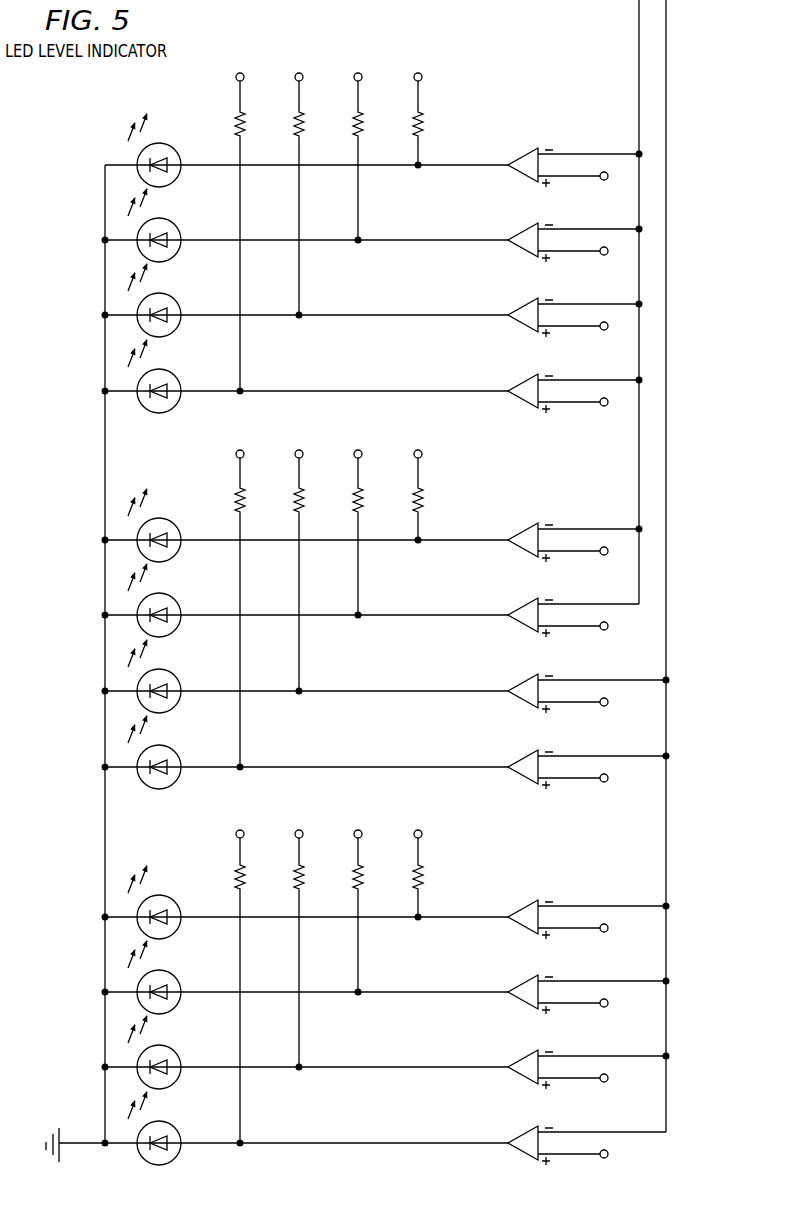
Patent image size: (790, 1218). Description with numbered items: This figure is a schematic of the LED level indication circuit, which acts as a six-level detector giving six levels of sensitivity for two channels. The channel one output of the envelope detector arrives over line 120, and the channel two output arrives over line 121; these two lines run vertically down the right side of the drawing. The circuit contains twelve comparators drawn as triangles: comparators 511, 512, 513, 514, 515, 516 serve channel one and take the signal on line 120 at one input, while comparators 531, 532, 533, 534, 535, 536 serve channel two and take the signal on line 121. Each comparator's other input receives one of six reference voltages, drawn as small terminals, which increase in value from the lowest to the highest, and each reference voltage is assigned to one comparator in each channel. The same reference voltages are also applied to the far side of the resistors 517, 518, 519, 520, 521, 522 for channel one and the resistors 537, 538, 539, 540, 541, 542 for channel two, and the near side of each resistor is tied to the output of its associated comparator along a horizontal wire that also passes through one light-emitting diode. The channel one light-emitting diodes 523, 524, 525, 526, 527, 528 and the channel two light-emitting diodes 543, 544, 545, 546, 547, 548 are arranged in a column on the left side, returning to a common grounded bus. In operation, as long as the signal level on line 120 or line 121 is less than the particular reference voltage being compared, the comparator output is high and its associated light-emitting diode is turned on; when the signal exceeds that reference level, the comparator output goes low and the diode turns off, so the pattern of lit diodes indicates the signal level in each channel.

The line 120 is at (639, 80).
The line 121 is at (666, 80).
The comparator 511 is at (573, 616).
The comparator 512 is at (573, 541).
The comparator 513 is at (573, 392).
The comparator 514 is at (573, 316).
The comparator 515 is at (573, 241).
The comparator 516 is at (573, 166).
The comparator 531 is at (587, 1144).
The comparator 532 is at (587, 1068).
The comparator 533 is at (587, 993).
The comparator 534 is at (587, 918).
The comparator 535 is at (587, 768).
The comparator 536 is at (587, 692).
The resistor 517 is at (350, 525).
The resistor 518 is at (410, 487).
The resistor 519 is at (232, 224).
The resistor 520 is at (291, 186).
The resistor 521 is at (350, 149).
The resistor 522 is at (410, 111).
The resistor 537 is at (232, 979).
The resistor 538 is at (291, 941).
The resistor 539 is at (350, 903).
The resistor 540 is at (410, 866).
The resistor 541 is at (232, 601).
The resistor 542 is at (291, 563).
The light-emitting diode 523 is at (160, 600).
The light-emitting diode 524 is at (160, 525).
The light-emitting diode 525 is at (160, 376).
The light-emitting diode 526 is at (160, 300).
The light-emitting diode 527 is at (160, 225).
The light-emitting diode 528 is at (160, 150).
The light-emitting diode 543 is at (160, 1128).
The light-emitting diode 544 is at (160, 1052).
The light-emitting diode 545 is at (160, 977).
The light-emitting diode 546 is at (160, 902).
The light-emitting diode 547 is at (160, 752).
The light-emitting diode 548 is at (160, 676).